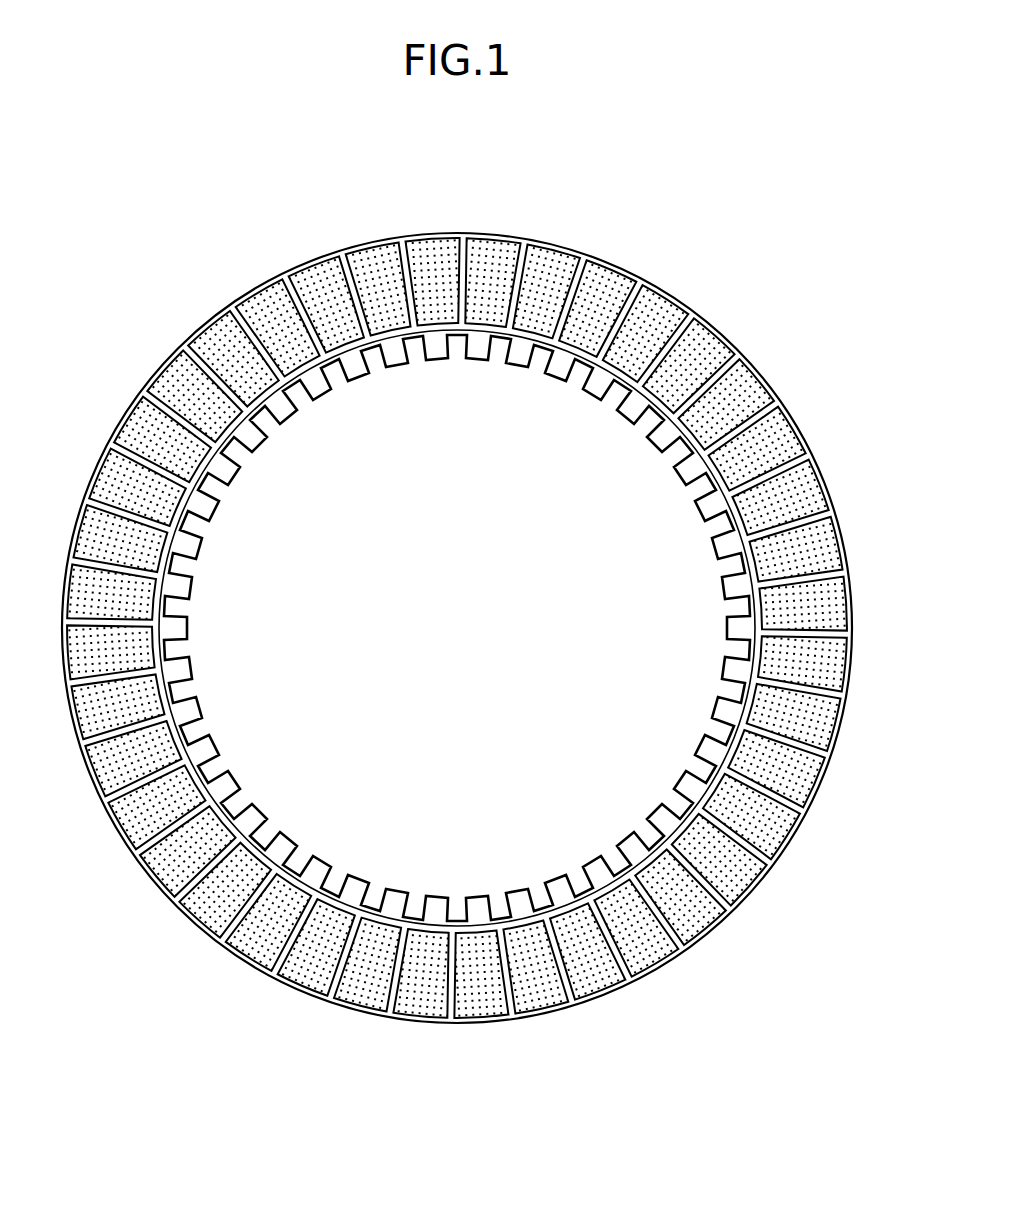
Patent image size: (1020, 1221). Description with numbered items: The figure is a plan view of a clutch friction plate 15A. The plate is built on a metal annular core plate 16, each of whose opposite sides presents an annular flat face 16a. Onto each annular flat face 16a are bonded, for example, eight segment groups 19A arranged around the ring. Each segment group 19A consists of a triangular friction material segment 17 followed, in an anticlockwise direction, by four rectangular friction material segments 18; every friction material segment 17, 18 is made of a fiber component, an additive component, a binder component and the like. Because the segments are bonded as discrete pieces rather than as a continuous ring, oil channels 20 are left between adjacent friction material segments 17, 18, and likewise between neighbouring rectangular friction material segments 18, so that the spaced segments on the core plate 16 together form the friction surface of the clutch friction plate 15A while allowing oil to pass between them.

The clutch friction plate 15A is at (150, 378).
The core plate 16 is at (615, 993).
The annular flat face 16a is at (350, 338).
The triangular friction material segment 17 is at (800, 473).
The rectangular friction material segment 18 is at (657, 320).
The segment group 19A is at (860, 315).
The oil channel 20 is at (405, 282).